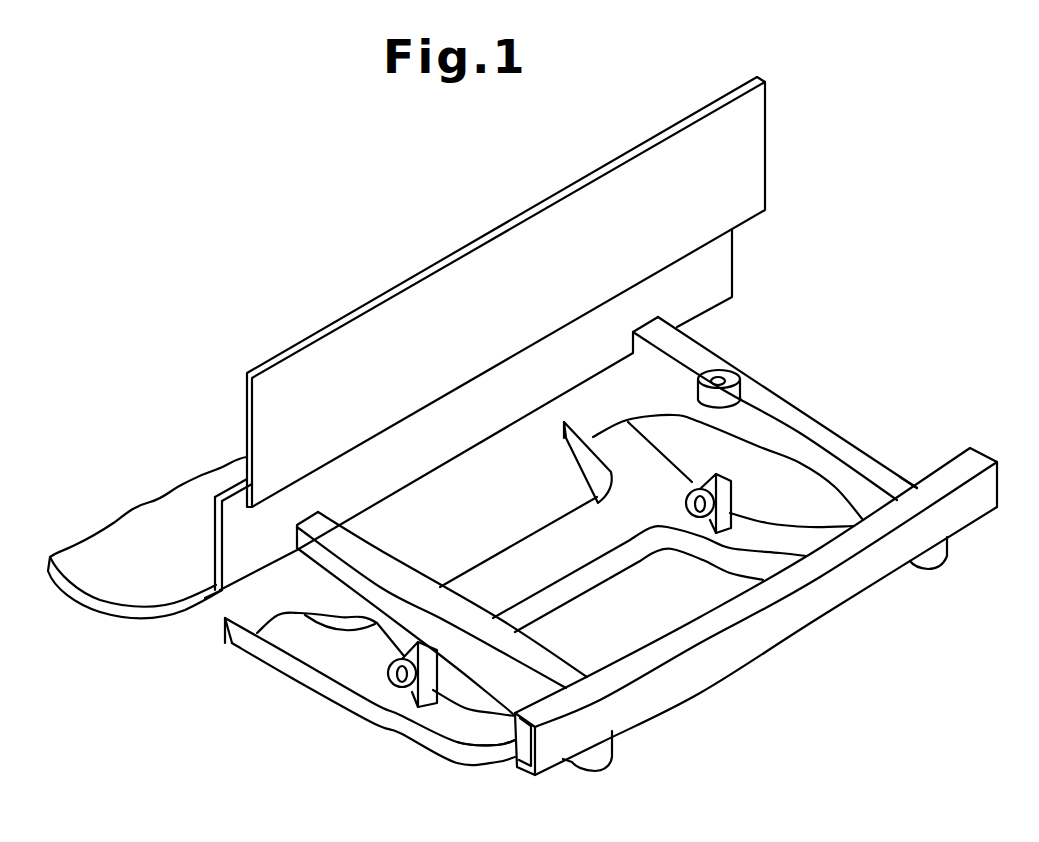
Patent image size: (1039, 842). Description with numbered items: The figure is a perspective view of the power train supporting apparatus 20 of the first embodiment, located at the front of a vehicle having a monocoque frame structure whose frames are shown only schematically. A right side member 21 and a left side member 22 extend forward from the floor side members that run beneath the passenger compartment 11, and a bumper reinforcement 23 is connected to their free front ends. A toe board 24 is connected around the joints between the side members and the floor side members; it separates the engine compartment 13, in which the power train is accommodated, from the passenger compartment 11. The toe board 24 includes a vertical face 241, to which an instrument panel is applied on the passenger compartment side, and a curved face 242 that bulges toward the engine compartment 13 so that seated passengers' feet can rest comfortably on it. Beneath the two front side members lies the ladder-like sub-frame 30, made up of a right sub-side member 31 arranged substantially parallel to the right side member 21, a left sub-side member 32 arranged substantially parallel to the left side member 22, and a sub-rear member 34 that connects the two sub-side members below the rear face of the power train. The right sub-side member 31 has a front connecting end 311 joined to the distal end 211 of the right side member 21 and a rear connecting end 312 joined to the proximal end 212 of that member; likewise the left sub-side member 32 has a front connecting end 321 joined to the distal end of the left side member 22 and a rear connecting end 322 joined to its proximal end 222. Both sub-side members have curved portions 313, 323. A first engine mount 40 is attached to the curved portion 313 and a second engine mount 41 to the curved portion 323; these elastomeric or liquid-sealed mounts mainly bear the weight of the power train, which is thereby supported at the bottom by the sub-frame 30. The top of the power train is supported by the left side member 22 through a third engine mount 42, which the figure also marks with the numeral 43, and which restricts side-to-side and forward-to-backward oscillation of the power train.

The passenger compartment 11 is at (278, 279).
The engine compartment 13 is at (660, 613).
The supporting apparatus 20 is at (870, 393).
The right side member 21 is at (325, 593).
The distal end 211 is at (580, 655).
The proximal end 212 is at (893, 468).
The left side member 22 is at (651, 398).
The proximal end 222 is at (583, 403).
The bumper reinforcement 23 is at (778, 632).
The toe board 24 is at (153, 520).
The vertical face 241 is at (457, 354).
The curved face 242 is at (183, 620).
The sub-frame 30 is at (406, 765).
The right sub-side member 31 is at (320, 683).
The front connecting end 311 is at (607, 753).
The rear connecting end 312 is at (233, 645).
The curved portion 313 is at (376, 728).
The left sub-side member 32 is at (665, 452).
The front connecting end 321 is at (937, 560).
The rear connecting end 322 is at (564, 440).
The curved portion 323 is at (733, 511).
The sub-rear member 34 is at (502, 548).
The first engine mount 40 is at (391, 648).
The second engine mount 41 is at (730, 482).
The third engine mount 42 is at (728, 372).
The vibration isolator 43 is at (719, 389).